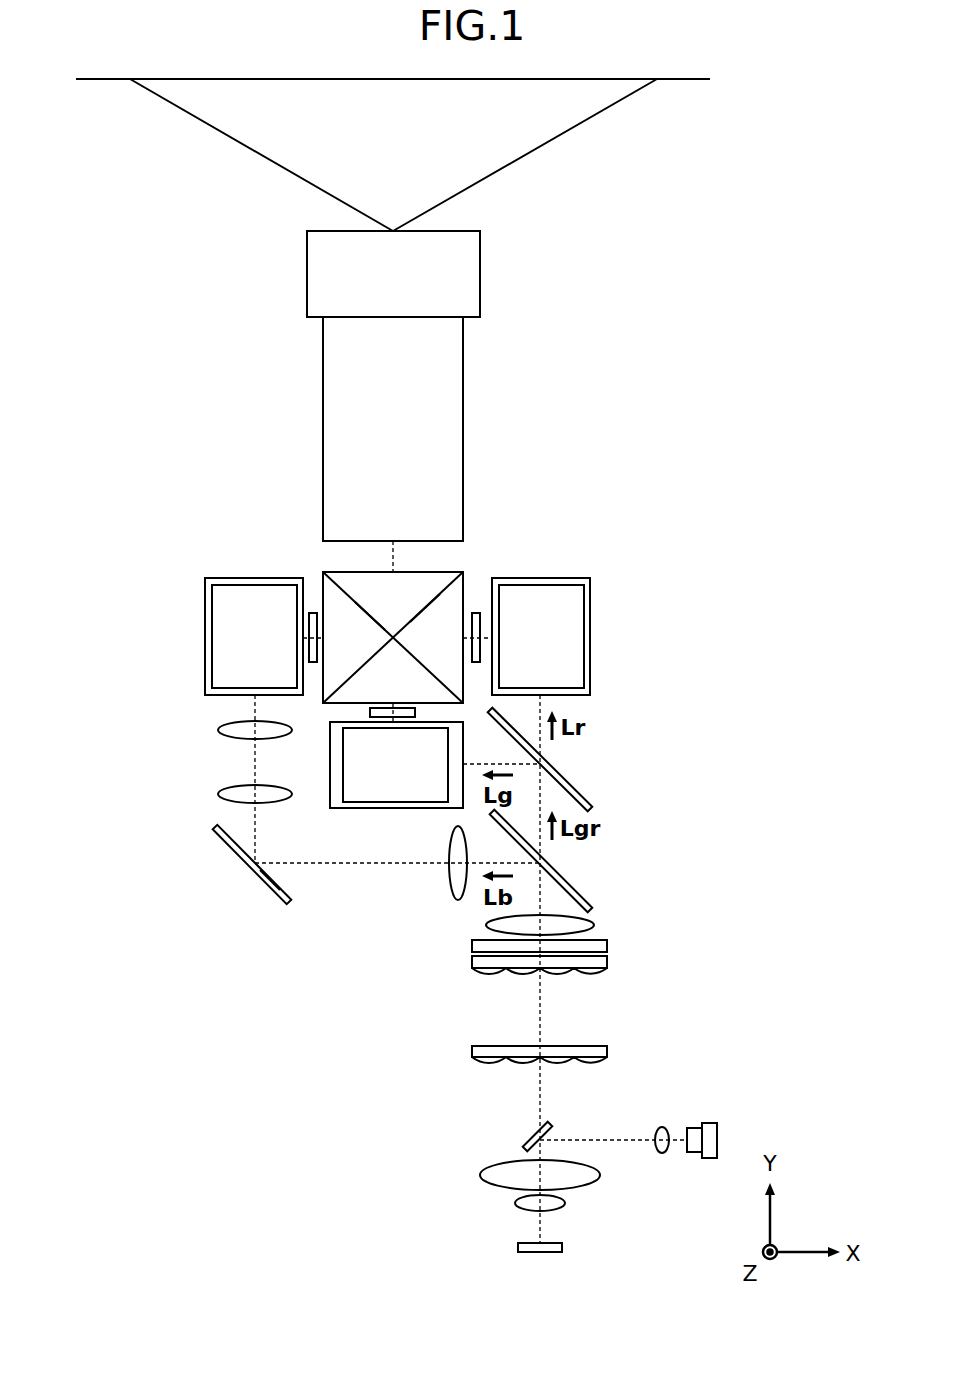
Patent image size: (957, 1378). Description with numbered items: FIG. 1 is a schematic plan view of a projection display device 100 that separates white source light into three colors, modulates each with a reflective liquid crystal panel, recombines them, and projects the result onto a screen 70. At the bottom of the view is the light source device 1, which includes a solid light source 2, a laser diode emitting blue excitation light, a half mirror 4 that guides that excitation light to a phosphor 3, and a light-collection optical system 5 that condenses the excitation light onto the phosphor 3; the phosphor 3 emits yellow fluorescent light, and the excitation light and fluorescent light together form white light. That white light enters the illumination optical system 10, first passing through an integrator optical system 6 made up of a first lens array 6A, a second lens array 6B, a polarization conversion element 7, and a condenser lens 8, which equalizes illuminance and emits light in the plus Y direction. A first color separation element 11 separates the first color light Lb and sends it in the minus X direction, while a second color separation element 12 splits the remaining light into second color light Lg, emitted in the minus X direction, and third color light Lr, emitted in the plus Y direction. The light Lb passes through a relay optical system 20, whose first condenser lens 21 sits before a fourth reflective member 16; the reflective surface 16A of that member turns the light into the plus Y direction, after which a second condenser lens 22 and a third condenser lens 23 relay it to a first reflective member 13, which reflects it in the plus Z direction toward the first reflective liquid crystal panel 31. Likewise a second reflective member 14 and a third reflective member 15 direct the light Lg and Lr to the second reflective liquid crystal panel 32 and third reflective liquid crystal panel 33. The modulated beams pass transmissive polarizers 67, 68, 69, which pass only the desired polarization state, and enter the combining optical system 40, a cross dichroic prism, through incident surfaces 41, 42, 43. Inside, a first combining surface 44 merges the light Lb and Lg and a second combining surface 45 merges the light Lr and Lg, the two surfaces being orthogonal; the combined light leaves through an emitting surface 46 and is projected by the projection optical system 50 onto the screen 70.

The projection display device 100 is at (675, 292).
The screen 70 is at (685, 81).
The projection optical system 50 is at (480, 270).
The combining optical system 40 is at (471, 578).
The incident surface 41 is at (322, 592).
The incident surface 42 is at (348, 704).
The incident surface 43 is at (464, 684).
The first combining surface 44 is at (424, 607).
The second combining surface 45 is at (371, 609).
The emitting surface 46 is at (423, 571).
The first reflective member 13 is at (223, 608).
The second reflective member 14 is at (396, 790).
The third reflective member 15 is at (571, 608).
The first reflective liquid crystal panel 31 is at (252, 600).
The second reflective liquid crystal panel 32 is at (365, 787).
The third reflective liquid crystal panel 33 is at (538, 600).
The transmissive polarizer 67 is at (318, 660).
The transmissive polarizer 68 is at (400, 707).
The transmissive polarizer 69 is at (472, 660).
The illumination optical system 10 is at (675, 801).
The first color separation element 11 is at (568, 884).
The second color separation element 12 is at (571, 785).
The relay optical system 20 is at (151, 761).
The first condenser lens 21 is at (451, 888).
The second condenser lens 22 is at (218, 794).
The third condenser lens 23 is at (218, 730).
The fourth reflective member 16 is at (266, 886).
The reflective surface 16A is at (283, 889).
The light source device 1 is at (706, 1100).
The solid light source 2 is at (717, 1130).
The phosphor 3 is at (562, 1247).
The half mirror 4 is at (530, 1142).
The light-collection optical system 5 is at (469, 1185).
The integrator optical system 6 is at (532, 1001).
The first lens array 6A is at (472, 1051).
The second lens array 6B is at (472, 962).
The polarization conversion element 7 is at (472, 946).
The condenser lens 8 is at (487, 925).